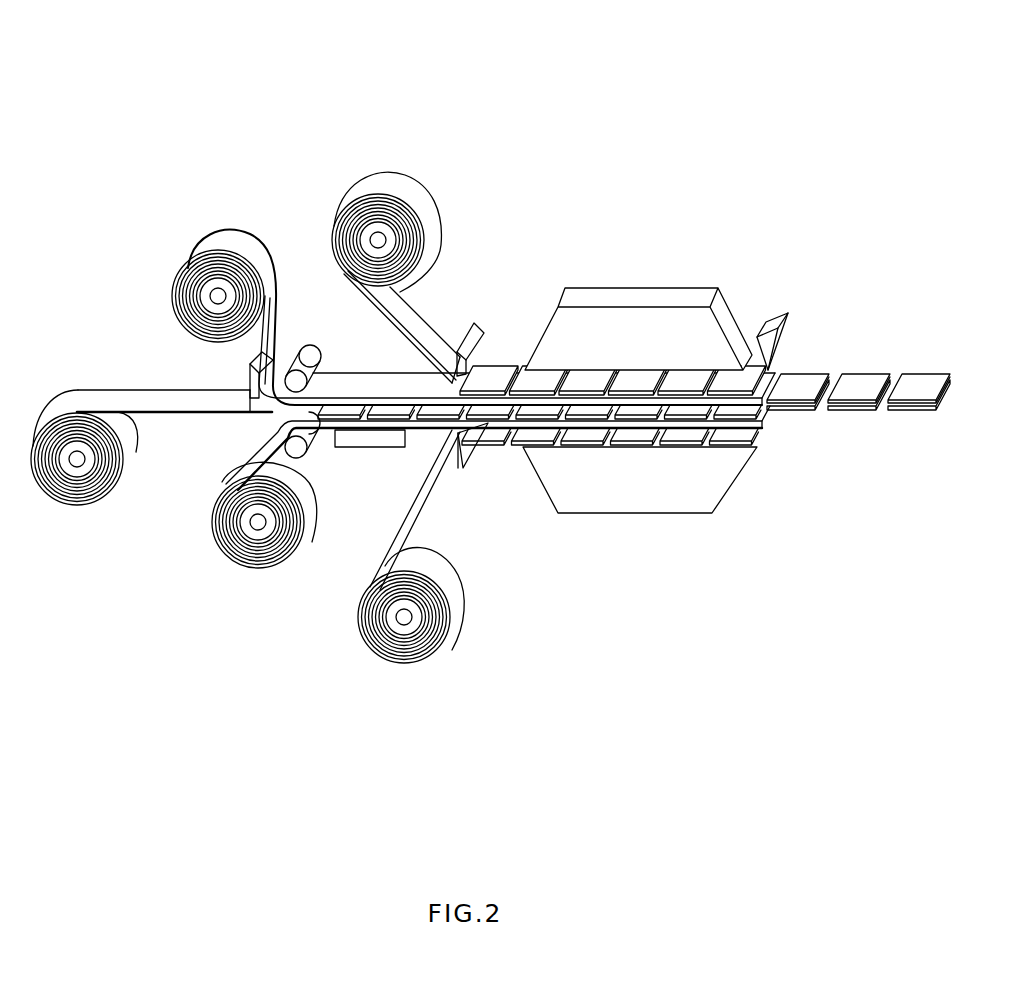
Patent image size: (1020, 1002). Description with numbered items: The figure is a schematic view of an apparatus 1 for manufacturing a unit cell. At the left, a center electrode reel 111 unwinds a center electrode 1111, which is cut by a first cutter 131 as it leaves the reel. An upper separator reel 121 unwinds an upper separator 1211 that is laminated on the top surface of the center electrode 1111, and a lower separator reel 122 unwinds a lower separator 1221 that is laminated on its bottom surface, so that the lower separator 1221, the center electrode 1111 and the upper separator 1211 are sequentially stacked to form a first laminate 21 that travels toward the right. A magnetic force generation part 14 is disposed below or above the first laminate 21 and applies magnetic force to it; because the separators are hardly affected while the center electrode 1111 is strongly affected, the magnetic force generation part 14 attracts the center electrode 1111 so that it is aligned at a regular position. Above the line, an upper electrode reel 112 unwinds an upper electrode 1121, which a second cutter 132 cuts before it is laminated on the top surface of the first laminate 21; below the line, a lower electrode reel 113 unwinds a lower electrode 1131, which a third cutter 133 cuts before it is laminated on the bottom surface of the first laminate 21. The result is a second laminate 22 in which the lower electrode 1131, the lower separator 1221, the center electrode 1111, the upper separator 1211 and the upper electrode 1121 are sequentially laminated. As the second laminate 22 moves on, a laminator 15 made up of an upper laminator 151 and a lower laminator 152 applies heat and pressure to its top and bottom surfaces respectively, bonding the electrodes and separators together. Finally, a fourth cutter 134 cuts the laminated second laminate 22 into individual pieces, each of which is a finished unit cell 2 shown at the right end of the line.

The apparatus for manufacturing a unit cell 1 is at (541, 66).
The center electrode reel 111 is at (68, 400).
The center electrode 1111 is at (150, 392).
The upper electrode reel 112 is at (386, 185).
The upper electrode 1121 is at (413, 322).
The lower electrode reel 113 is at (402, 665).
The lower electrode 1131 is at (424, 497).
The upper separator reel 121 is at (226, 238).
The upper separator 1211 is at (276, 325).
The lower separator reel 122 is at (215, 540).
The lower separator 1221 is at (252, 450).
The first cutter 131 is at (250, 370).
The second cutter 132 is at (478, 330).
The third cutter 133 is at (468, 458).
The fourth cutter 134 is at (774, 325).
The magnetic force generation part 14 is at (362, 438).
The laminator 15 is at (635, 222).
The upper laminator 151 is at (627, 298).
The lower laminator 152 is at (652, 468).
The first laminate 21 is at (366, 362).
The second laminate 22 is at (518, 347).
The unit cell 2 is at (911, 406).